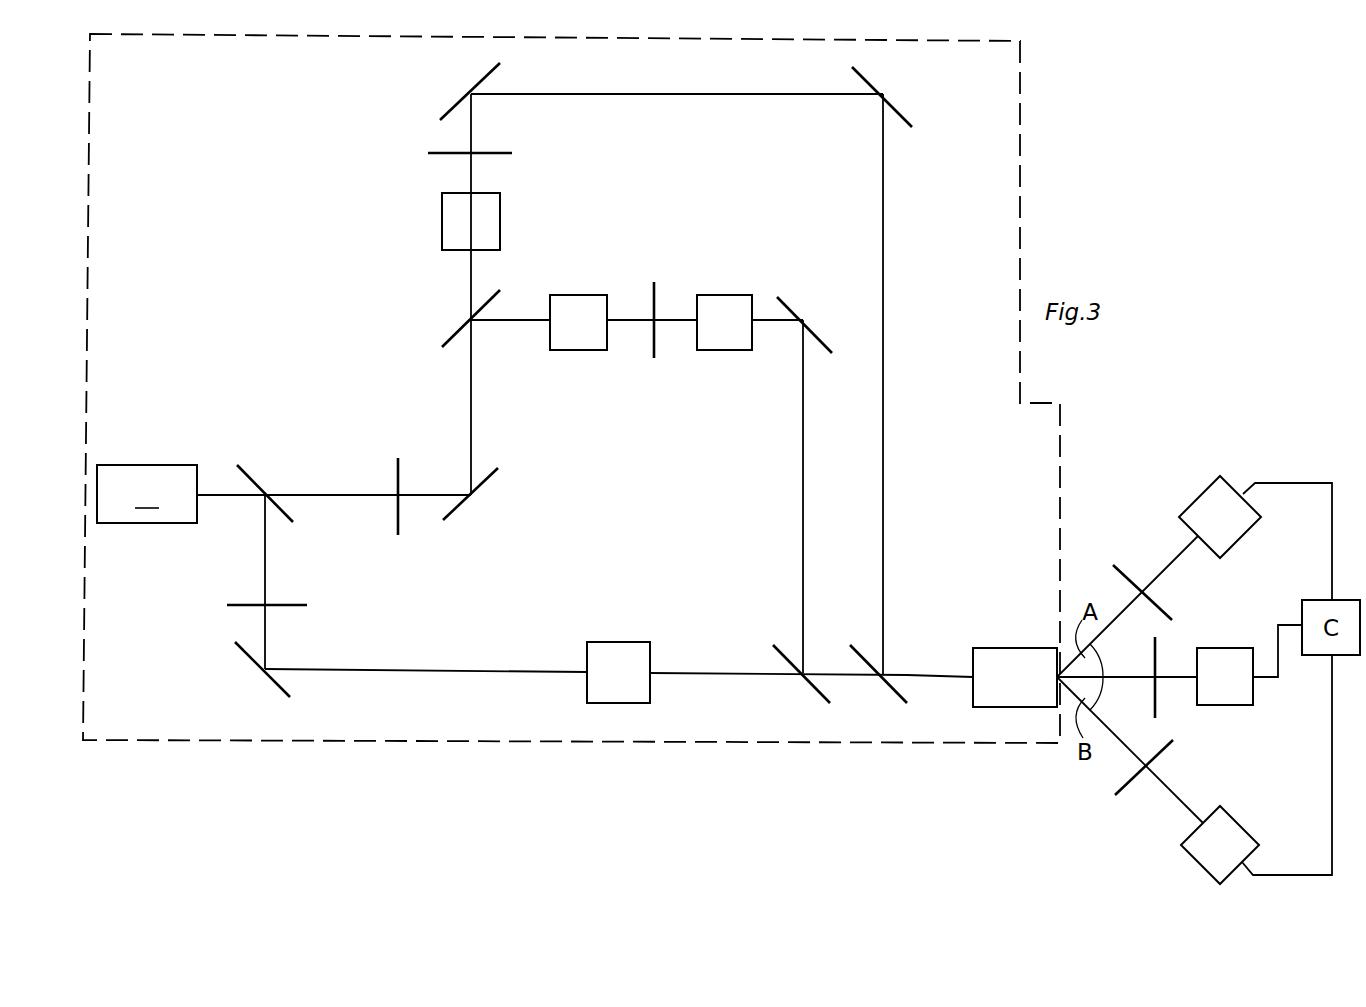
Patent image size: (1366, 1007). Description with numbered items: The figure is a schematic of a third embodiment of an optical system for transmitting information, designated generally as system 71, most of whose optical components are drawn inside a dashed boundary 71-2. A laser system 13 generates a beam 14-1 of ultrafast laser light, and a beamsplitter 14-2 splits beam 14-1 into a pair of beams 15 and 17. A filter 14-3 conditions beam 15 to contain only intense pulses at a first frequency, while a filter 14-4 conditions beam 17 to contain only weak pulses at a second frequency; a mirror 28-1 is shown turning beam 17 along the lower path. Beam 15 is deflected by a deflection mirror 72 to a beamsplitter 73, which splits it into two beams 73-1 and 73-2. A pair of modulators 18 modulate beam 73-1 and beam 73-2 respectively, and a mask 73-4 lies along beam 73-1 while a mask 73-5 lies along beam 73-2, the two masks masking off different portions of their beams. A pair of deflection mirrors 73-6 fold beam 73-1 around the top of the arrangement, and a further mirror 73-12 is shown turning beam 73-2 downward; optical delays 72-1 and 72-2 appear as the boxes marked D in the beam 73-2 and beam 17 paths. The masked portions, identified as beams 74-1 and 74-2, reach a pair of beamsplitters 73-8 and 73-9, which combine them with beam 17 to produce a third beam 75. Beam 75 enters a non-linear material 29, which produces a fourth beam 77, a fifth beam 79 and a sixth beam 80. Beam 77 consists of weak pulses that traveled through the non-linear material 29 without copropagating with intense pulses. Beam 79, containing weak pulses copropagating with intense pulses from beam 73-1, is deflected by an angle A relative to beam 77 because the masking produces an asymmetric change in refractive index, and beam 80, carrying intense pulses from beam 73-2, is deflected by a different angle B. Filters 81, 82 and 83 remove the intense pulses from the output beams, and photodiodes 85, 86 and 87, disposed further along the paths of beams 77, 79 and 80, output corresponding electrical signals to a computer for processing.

The laser system 13 is at (147, 494).
The beam of ultrafast laser light 14-1 is at (225, 497).
The beamsplitter 14-2 is at (262, 472).
The filter 14-3 is at (400, 467).
The filter 14-4 is at (294, 603).
The beam 15 is at (337, 495).
The beam 17 is at (266, 560).
The modulator 18 is at (442, 222).
The mirror 28-1 is at (272, 683).
The non-linear material 29 is at (998, 648).
The optical system for transmitting information 71 is at (426, 760).
The optical unit 71-2 is at (1018, 168).
The deflection mirror 72 is at (455, 512).
The optical delay 72-1 is at (722, 295).
The optical delay 72-2 is at (617, 642).
The beamsplitter 73 is at (450, 332).
The beam 73-1 is at (471, 282).
The beam 73-2 is at (512, 322).
The mask 73-4 is at (453, 152).
The mask 73-5 is at (650, 338).
The deflection mirror 73-6 is at (475, 85).
The beamsplitter 73-8 is at (815, 688).
The beamsplitter 73-9 is at (892, 690).
The mirror 73-12 is at (793, 307).
The beam 74-1 is at (803, 426).
The beam 74-2 is at (883, 428).
The third beam 75 is at (928, 675).
The fourth beam 77 is at (1130, 678).
The fifth beam 79 is at (1123, 607).
The sixth beam 80 is at (1125, 748).
The filter 81 is at (1120, 567).
The filter 82 is at (1128, 785).
The filter 83 is at (1158, 703).
The photodiode 85 is at (1203, 494).
The photodiode 86 is at (1225, 648).
The photodiode 87 is at (1245, 822).